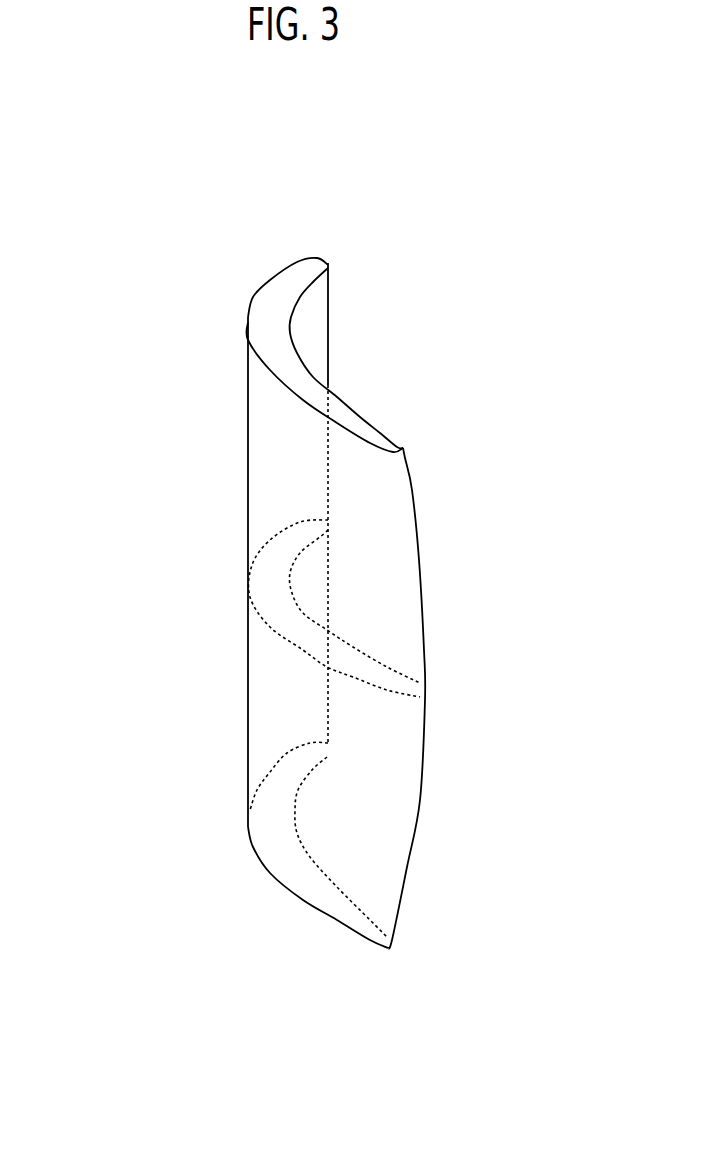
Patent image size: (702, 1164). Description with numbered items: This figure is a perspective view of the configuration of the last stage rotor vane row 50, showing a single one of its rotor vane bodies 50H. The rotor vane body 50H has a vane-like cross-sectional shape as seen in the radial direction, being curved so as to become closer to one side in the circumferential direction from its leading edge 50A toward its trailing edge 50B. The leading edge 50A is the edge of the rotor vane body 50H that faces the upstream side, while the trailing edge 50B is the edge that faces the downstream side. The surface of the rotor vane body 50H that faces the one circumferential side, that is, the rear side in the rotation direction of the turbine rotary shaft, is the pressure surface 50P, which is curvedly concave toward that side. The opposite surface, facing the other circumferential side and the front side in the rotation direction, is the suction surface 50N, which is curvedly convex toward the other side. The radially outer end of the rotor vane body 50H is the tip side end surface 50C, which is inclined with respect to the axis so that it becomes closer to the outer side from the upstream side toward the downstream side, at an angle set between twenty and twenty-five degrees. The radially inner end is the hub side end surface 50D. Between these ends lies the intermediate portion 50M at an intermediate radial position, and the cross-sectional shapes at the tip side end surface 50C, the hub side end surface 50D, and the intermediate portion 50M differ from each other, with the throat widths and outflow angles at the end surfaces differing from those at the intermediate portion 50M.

The last stage rotor vane row 50 is at (186, 311).
The rotor vane body 50H is at (324, 355).
The leading edge 50A is at (332, 317).
The trailing edge 50B is at (423, 607).
The tip side end surface 50C is at (272, 323).
The hub side end surface 50D is at (290, 863).
The suction surface 50N is at (270, 445).
The intermediate portion 50M is at (270, 587).
The pressure surface 50P is at (358, 533).